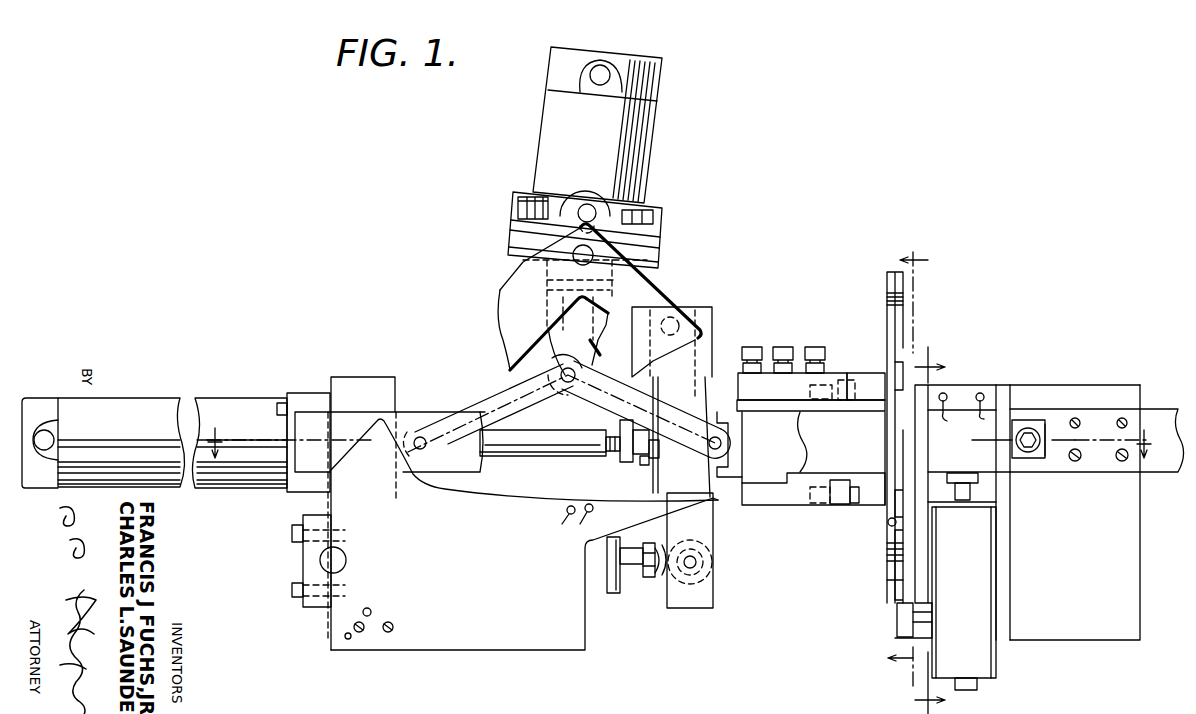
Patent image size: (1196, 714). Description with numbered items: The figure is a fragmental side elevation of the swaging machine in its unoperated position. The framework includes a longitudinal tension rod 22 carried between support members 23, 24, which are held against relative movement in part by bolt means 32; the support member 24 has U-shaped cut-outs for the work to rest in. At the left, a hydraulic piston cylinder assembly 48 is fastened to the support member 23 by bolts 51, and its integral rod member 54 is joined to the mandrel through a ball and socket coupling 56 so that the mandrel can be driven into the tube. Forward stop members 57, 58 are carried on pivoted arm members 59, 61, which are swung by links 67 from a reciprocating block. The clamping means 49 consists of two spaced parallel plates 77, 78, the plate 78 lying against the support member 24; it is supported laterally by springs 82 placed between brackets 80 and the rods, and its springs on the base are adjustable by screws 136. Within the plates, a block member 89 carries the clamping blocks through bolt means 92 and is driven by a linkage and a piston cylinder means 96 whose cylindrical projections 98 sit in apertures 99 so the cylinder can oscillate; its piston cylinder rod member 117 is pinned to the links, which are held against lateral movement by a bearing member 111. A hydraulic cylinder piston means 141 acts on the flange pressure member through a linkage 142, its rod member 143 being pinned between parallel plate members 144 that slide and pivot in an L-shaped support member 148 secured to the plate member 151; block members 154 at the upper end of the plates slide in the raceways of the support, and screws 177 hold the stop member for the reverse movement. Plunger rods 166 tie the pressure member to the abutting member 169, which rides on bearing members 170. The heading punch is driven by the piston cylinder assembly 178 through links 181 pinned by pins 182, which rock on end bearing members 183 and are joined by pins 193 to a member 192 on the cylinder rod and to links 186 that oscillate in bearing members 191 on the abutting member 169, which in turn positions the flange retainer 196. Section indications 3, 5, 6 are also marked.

The section line 3- 3 is at (680, 431).
The section line 5- 5 is at (937, 526).
The section line 6- 6 is at (907, 458).
The longitudinal tension rod 22 is at (1107, 463).
The support member 23 is at (360, 575).
The support member 24 is at (1123, 392).
The bolt means 32 is at (1118, 451).
The hydraulic piston cylinder assembly 48 is at (243, 392).
The clamping means 49 is at (990, 493).
The bolts 51 is at (283, 409).
The rod member 54 is at (517, 450).
The ball and socket coupling 56 is at (583, 459).
The forward stop member 57 is at (897, 280).
The forward stop member 58 is at (898, 538).
The pivoted arm member 59 is at (888, 259).
The pivoted arm member 61 is at (880, 580).
The links 67 is at (897, 400).
The parallel plate 77 is at (922, 390).
The parallel plate 78 is at (1000, 385).
The brackets 80 is at (1018, 428).
The springs 82 is at (1043, 433).
The block member 89 is at (987, 387).
The bolt means 92 is at (961, 415).
The piston cylinder means 96 is at (983, 657).
The cylindrical projections 98 is at (1000, 626).
The apertures 99 is at (1000, 602).
The bearing member 111 is at (982, 458).
The piston cylinder rod member 117 is at (963, 493).
The screws 136 is at (978, 687).
The hydraulic cylinder piston means 141 is at (600, 593).
The linkage 142 is at (757, 567).
The rod member 143 is at (633, 570).
The parallel plate members 144 is at (700, 525).
The L-shaped support member 148 is at (715, 316).
The plate member 151 is at (683, 262).
The block member 154 is at (693, 315).
The plunger rods 166 is at (567, 487).
The abutting member 169 is at (790, 385).
The bearing members 170 is at (752, 402).
The screws 177 is at (583, 516).
The piston cylinder assembly 178 is at (645, 137).
The links 181 is at (494, 405).
The pins 182 is at (431, 458).
The end bearing member 183 is at (405, 413).
The links 186 is at (608, 398).
The bearing members 191 is at (733, 427).
The member 192 is at (569, 332).
The pins 193 is at (562, 372).
The flange retainer 196 is at (863, 373).